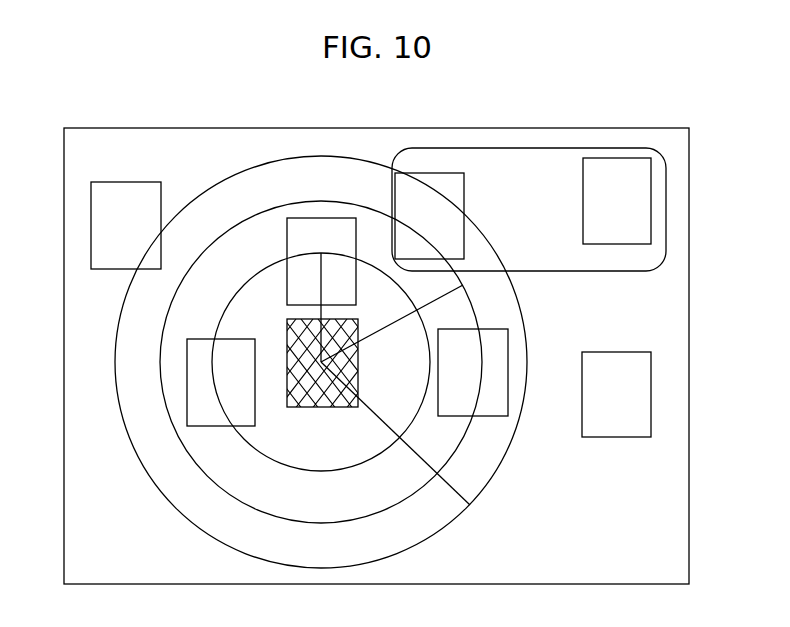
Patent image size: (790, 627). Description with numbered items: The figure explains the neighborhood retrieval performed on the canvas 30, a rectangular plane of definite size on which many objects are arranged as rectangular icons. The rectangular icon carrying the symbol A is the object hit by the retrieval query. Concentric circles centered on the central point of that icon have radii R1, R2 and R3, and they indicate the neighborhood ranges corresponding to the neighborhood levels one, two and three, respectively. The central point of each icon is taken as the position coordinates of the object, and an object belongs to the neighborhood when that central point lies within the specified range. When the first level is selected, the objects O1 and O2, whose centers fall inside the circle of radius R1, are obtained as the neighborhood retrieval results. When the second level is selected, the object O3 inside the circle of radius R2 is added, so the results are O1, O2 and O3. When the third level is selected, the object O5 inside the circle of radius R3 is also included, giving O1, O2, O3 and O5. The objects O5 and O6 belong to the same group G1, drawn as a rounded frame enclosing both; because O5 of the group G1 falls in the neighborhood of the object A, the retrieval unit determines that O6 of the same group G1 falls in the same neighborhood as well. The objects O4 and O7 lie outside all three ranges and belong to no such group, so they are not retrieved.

The canvas 30 is at (169, 138).
The group G1 is at (528, 148).
The object hit by the retrieval query A is at (324, 371).
The radius of first neighborhood range R1 is at (321, 362).
The radius of second neighborhood range R2 is at (321, 362).
The radius of third neighborhood range R3 is at (321, 362).
The object 01 O1 is at (221, 382).
The object 02 O2 is at (321, 261).
The object 03 O3 is at (473, 372).
The object 04 O4 is at (126, 225).
The object 05 O5 is at (429, 216).
The object 06 O6 is at (617, 201).
The object 07 O7 is at (616, 394).